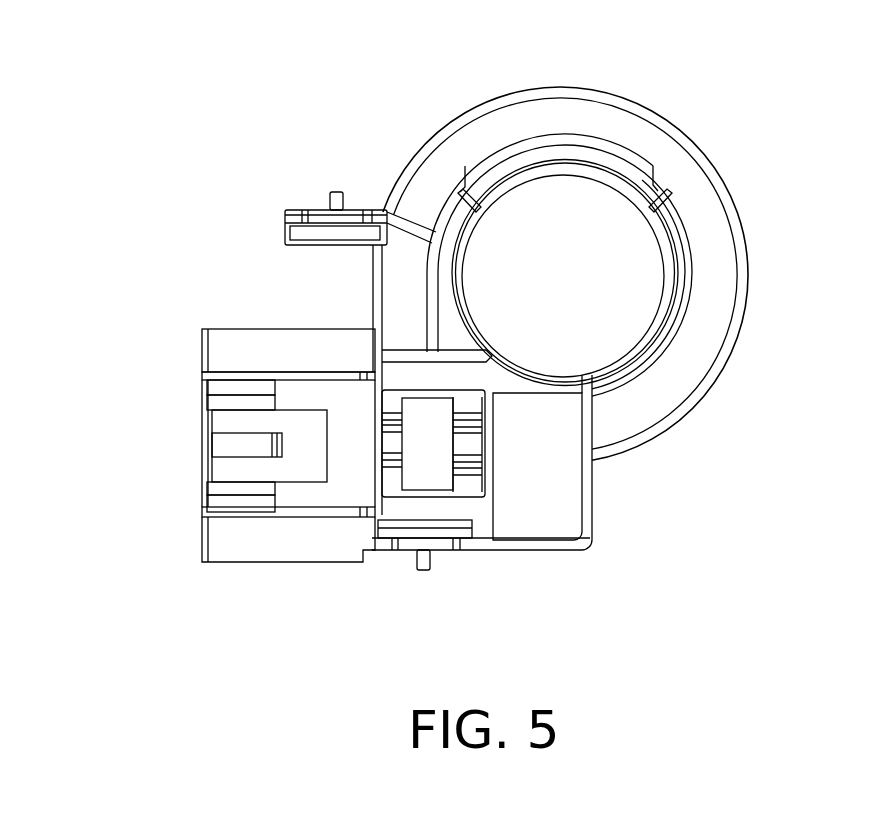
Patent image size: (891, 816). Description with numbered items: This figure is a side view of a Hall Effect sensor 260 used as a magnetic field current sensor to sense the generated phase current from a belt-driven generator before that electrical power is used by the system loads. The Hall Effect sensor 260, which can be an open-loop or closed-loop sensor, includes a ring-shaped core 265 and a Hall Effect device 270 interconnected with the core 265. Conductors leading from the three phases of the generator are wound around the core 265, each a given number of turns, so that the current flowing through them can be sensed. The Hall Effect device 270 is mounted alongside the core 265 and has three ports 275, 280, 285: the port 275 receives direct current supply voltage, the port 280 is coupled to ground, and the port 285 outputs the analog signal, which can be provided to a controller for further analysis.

The Hall Effect sensor 260 is at (792, 90).
The core 265 is at (748, 243).
The Hall Effect device 270 is at (558, 492).
The port 275 is at (236, 404).
The port 280 is at (232, 503).
The port 285 is at (235, 445).